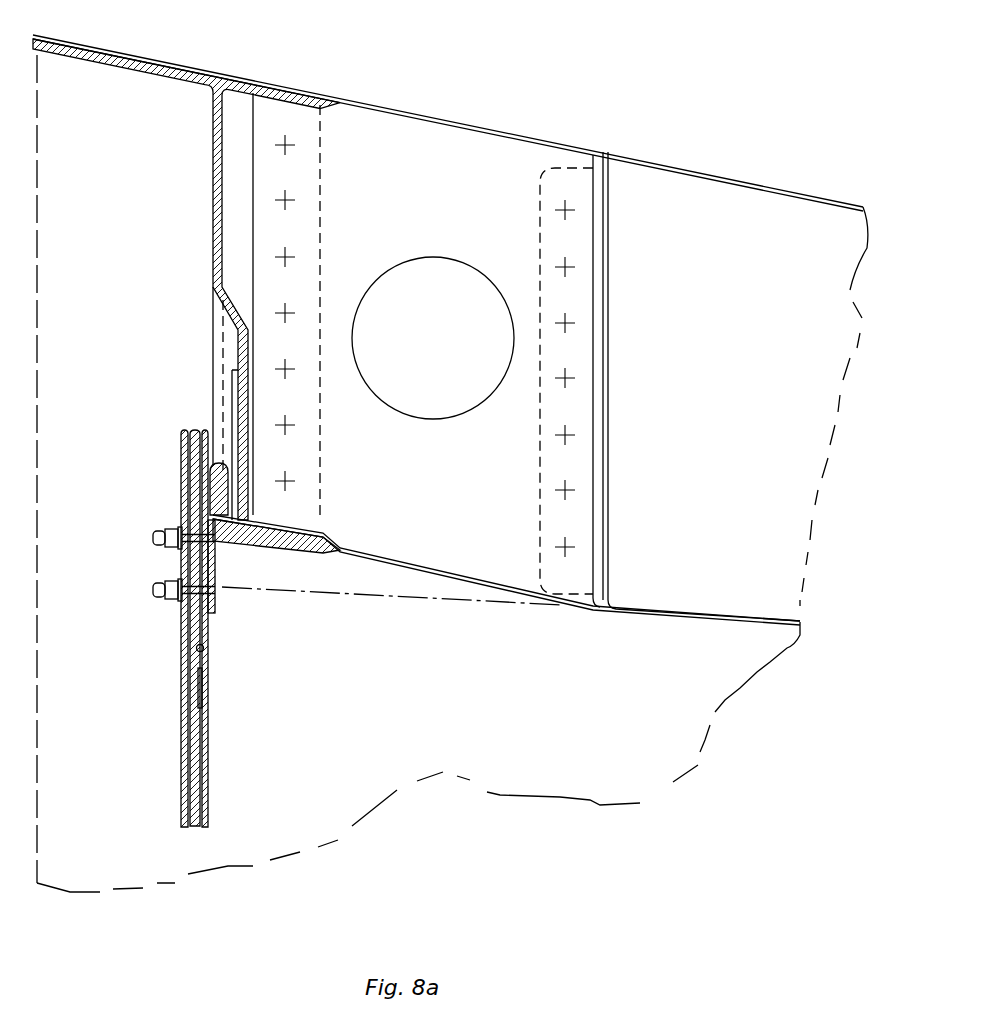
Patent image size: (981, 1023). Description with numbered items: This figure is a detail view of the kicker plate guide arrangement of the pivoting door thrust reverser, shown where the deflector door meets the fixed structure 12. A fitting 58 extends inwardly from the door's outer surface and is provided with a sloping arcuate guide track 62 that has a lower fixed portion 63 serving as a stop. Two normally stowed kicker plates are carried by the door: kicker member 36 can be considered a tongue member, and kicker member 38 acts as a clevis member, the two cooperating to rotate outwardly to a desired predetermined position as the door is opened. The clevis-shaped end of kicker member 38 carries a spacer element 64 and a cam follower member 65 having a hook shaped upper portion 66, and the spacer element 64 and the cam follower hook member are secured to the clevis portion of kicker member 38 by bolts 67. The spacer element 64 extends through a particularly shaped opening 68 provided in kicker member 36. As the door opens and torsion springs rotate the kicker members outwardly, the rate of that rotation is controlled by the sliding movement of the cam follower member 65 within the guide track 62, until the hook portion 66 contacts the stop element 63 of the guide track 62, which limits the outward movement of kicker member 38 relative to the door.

The fixed structure 12 is at (645, 158).
The fitting 58 is at (213, 207).
The sloping arcuate guide track 62 is at (237, 347).
The lower fixed portion 63 is at (277, 547).
The spacer element 64 is at (183, 648).
The cam follower member 65 is at (217, 565).
The hook shaped upper portion 66 is at (213, 465).
The bolts 67 is at (152, 590).
The opening 68 is at (203, 650).
The kicker member 36 is at (195, 828).
The kicker member 38 is at (208, 740).